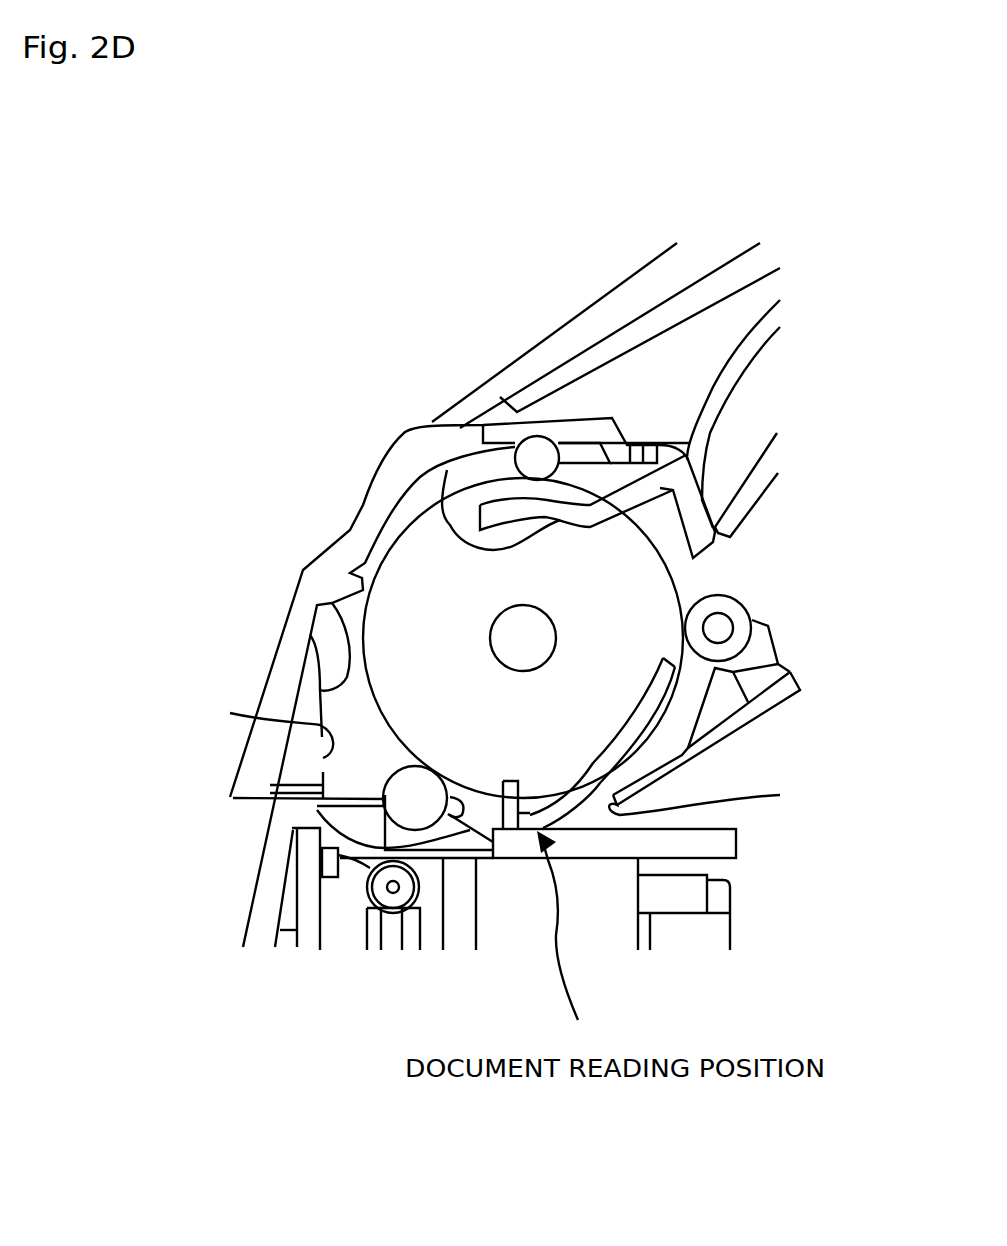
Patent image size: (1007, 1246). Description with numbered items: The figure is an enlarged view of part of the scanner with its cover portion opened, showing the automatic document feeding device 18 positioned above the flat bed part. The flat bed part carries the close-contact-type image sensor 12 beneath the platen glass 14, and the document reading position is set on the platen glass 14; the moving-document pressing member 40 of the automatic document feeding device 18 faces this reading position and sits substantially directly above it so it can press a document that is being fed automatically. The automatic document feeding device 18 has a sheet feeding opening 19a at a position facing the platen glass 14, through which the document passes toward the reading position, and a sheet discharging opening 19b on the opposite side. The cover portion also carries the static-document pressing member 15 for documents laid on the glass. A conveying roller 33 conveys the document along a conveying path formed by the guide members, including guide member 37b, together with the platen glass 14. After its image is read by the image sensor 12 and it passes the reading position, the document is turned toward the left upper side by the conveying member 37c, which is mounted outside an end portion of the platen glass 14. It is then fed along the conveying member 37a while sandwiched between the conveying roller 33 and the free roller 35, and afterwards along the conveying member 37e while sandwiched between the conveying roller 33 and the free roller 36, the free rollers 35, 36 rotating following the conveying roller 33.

The automatic document feeding device 18 is at (658, 220).
The free roller 36 is at (539, 445).
The conveying roller 33 is at (433, 597).
The conveying member 37e is at (447, 480).
The conveying member 37a is at (305, 568).
The guide member 37b is at (318, 716).
The conveying member 37c is at (400, 850).
The free roller 35 is at (392, 772).
The sheet discharging opening 19b is at (450, 797).
The close-contact-type image sensor 12 is at (523, 928).
The platen glass 14 is at (737, 843).
The moving-document pressing member 40 is at (580, 800).
The static-document pressing member 15 is at (703, 750).
The sheet feeding opening 19a is at (780, 795).